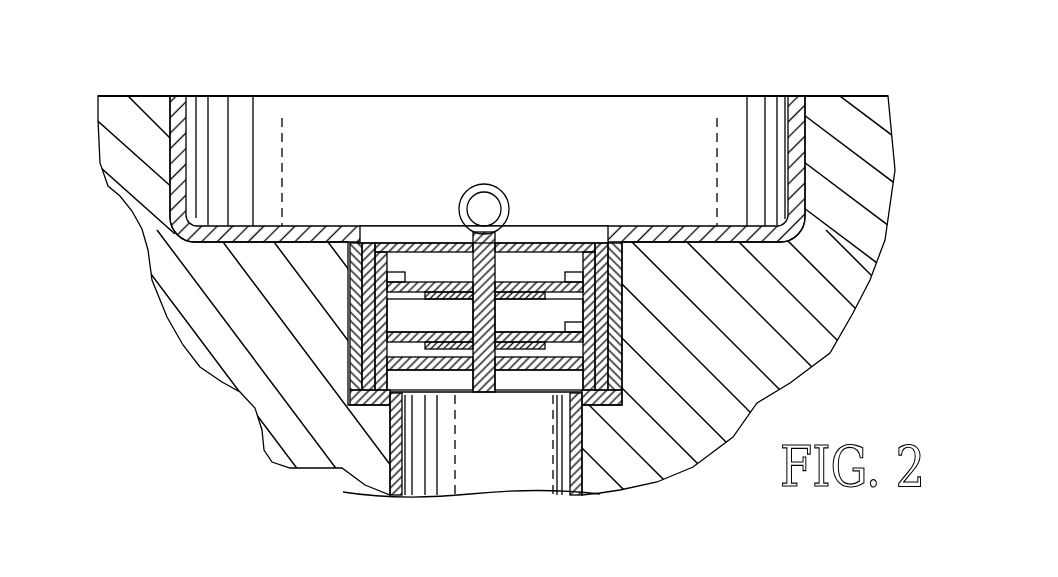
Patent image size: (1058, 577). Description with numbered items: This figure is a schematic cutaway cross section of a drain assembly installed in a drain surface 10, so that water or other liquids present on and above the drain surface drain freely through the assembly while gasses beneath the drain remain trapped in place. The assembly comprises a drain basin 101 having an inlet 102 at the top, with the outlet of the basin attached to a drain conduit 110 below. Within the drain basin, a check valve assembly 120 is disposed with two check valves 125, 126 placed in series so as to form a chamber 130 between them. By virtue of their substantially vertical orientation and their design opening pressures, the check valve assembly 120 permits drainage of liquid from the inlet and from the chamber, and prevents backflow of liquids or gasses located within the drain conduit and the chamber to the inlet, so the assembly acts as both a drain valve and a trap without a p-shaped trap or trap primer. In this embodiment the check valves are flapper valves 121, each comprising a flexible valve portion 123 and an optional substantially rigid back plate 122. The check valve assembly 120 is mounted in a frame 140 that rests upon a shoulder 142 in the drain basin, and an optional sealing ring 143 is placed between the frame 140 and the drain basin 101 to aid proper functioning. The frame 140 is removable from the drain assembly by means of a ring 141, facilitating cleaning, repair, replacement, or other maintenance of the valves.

The drain surface 10 is at (851, 96).
The drain basin 101 is at (628, 150).
The inlet 102 is at (312, 96).
The drain conduit 110 is at (548, 494).
The check valve assembly 120 is at (420, 275).
The flapper valves 121 is at (556, 280).
The back plates 122 is at (430, 311).
The flexible valve portions 123 is at (444, 281).
The check valve 125 is at (525, 281).
The check valve 126 is at (562, 342).
The chamber 130 is at (562, 326).
The frame 140 is at (452, 362).
The ring 141 is at (490, 186).
The shoulder 142 is at (392, 415).
The sealing ring 143 is at (369, 242).